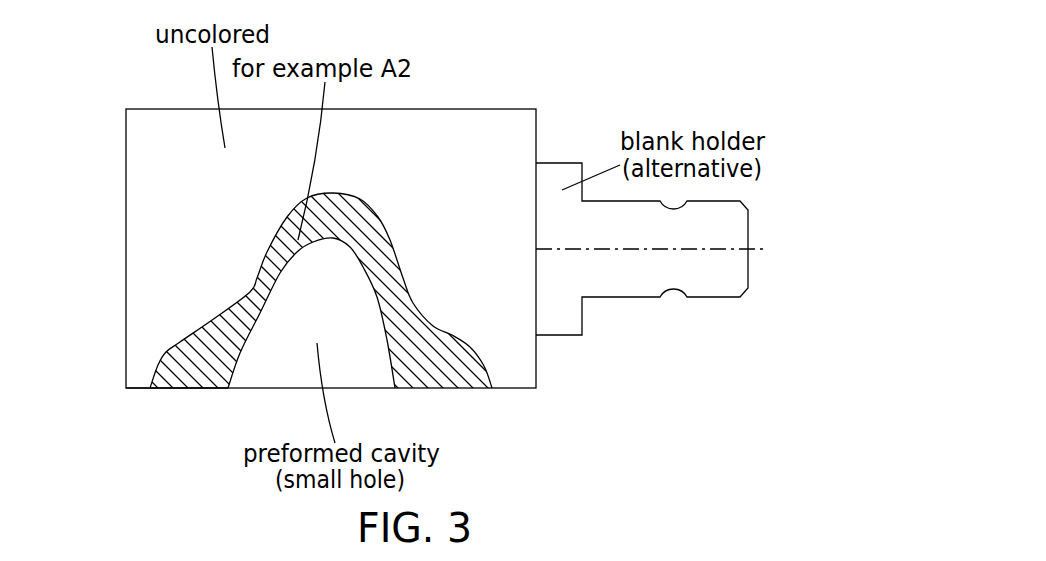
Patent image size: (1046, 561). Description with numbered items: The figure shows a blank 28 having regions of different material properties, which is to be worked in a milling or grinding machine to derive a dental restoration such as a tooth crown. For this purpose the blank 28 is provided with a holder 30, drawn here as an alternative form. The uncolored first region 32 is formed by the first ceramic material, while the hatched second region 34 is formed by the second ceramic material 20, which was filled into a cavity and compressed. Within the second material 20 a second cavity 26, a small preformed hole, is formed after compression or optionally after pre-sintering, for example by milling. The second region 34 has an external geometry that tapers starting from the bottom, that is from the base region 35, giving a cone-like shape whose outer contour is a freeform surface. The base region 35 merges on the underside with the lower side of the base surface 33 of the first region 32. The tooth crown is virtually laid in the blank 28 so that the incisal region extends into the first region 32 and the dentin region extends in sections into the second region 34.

The second ceramic material 20 is at (432, 367).
The second cavity 26 is at (277, 362).
The blank 28 is at (125, 312).
The holder 30 is at (583, 278).
The first region 32 is at (190, 206).
The base surface 33 is at (133, 388).
The second region 34 is at (187, 358).
The base region 35 is at (197, 388).